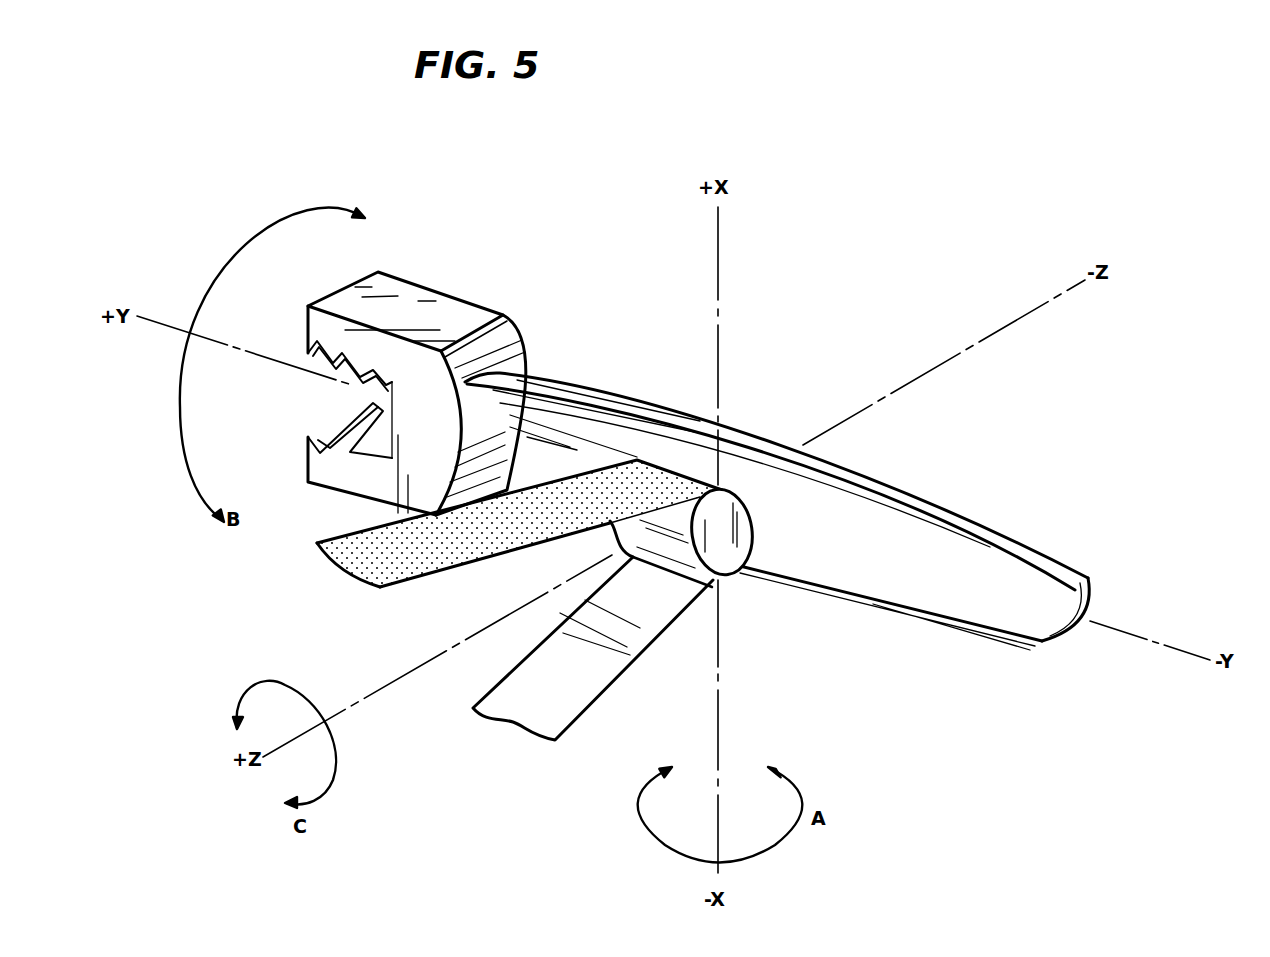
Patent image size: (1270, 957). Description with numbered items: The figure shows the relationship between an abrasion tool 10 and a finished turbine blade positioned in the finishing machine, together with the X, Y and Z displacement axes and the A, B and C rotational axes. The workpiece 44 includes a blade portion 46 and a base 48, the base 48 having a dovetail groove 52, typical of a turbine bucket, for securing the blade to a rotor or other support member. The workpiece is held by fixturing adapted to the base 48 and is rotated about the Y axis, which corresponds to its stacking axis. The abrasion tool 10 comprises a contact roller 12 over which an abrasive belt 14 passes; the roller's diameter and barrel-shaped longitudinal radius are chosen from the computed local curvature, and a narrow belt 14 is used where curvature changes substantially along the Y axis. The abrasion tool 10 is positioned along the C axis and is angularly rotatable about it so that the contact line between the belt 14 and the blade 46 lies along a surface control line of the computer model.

The abrasion tool 10 is at (758, 610).
The contact roller 12 is at (751, 543).
The abrasive belt 14 is at (612, 688).
The workpiece 44 is at (975, 455).
The blade portion 46 is at (615, 393).
The base 48 is at (437, 292).
The dovetail groove 52 is at (343, 440).